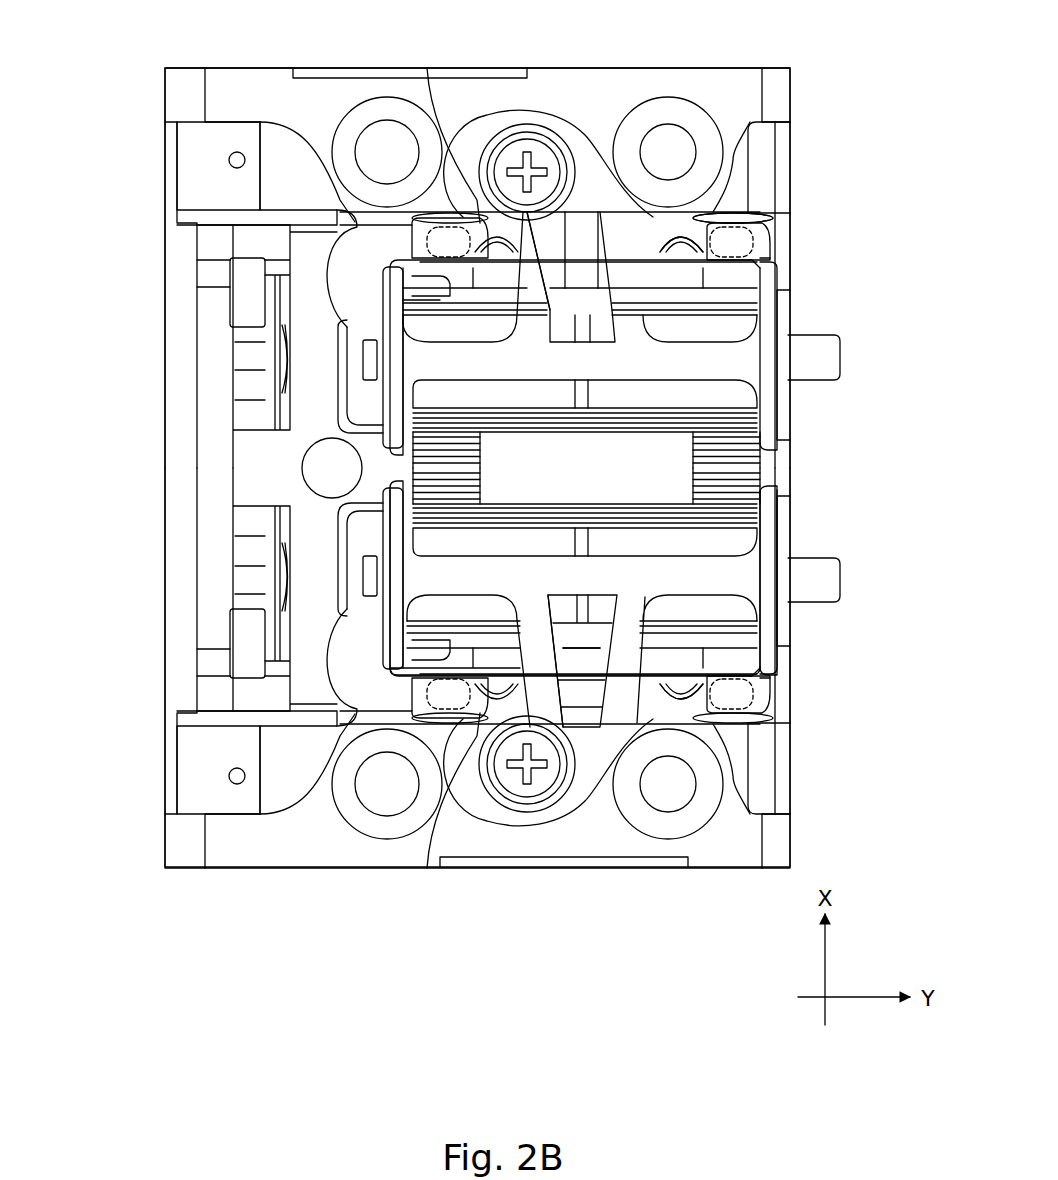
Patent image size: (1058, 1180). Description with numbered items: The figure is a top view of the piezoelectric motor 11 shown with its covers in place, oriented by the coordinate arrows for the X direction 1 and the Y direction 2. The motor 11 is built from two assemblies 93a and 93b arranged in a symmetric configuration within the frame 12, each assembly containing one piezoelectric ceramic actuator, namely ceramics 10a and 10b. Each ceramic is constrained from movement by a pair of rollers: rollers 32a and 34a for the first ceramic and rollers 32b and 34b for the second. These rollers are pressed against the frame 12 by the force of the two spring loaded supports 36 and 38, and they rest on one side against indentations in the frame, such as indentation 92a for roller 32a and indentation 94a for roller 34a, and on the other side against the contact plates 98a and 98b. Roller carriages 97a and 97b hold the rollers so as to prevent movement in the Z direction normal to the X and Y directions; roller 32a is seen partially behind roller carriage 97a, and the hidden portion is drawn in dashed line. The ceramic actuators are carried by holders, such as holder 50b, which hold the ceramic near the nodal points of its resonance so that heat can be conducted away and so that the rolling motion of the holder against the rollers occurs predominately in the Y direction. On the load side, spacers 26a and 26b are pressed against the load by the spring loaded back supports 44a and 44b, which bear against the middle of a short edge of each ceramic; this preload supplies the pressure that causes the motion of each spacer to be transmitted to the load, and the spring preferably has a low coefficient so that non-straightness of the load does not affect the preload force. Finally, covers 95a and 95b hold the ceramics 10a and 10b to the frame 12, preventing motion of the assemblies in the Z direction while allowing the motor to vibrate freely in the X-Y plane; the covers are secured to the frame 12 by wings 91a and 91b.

The X direction 1 is at (825, 935).
The Y direction 2 is at (890, 995).
The motor 11 is at (136, 119).
The frame 12 is at (177, 163).
The piezoelectric ceramic 10a is at (432, 330).
The piezoelectric ceramic 10b is at (407, 600).
The assembly 93a is at (444, 323).
The assembly 93b is at (464, 606).
The spring loaded back support 44a is at (285, 362).
The spring loaded back support 44b is at (285, 565).
The spring loaded support 38 is at (410, 468).
The spring loaded support 36 is at (790, 468).
The roller 34a is at (440, 230).
The roller 34b is at (425, 693).
The roller 32a is at (708, 228).
The roller 32b is at (773, 700).
The indentation 94a is at (445, 320).
The cover 95a is at (550, 305).
The cover 95b is at (537, 647).
The wing 91a is at (558, 358).
The wing 91b is at (541, 713).
The indentation 92a is at (770, 213).
The roller carriage 97a is at (735, 248).
The roller carriage 97b is at (770, 703).
The contact plate 98a is at (766, 263).
The contact plate 98b is at (695, 693).
The spacer 26a is at (840, 357).
The spacer 26b is at (840, 580).
The holder 50b is at (790, 642).